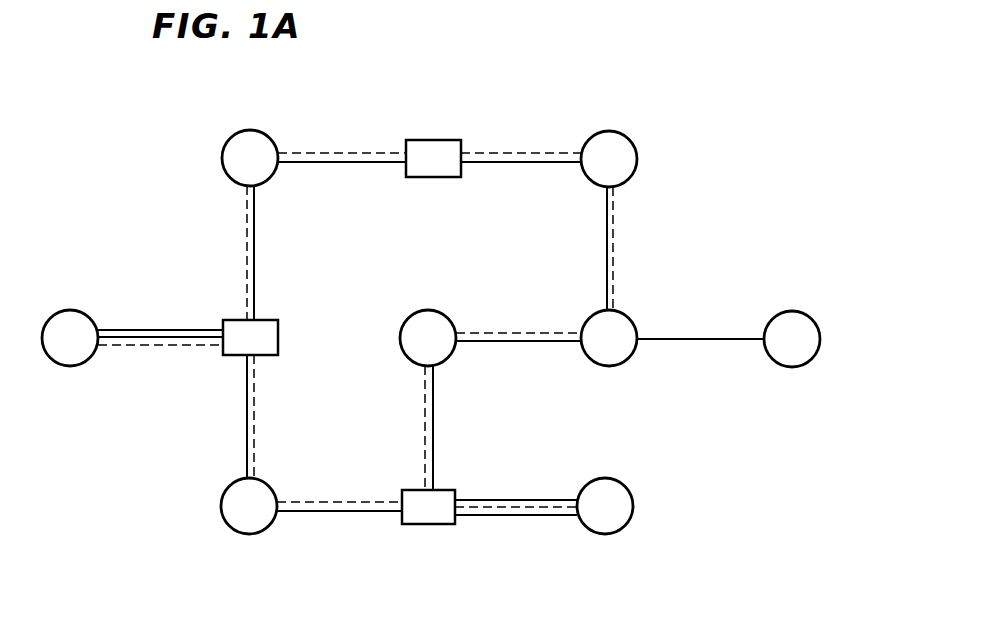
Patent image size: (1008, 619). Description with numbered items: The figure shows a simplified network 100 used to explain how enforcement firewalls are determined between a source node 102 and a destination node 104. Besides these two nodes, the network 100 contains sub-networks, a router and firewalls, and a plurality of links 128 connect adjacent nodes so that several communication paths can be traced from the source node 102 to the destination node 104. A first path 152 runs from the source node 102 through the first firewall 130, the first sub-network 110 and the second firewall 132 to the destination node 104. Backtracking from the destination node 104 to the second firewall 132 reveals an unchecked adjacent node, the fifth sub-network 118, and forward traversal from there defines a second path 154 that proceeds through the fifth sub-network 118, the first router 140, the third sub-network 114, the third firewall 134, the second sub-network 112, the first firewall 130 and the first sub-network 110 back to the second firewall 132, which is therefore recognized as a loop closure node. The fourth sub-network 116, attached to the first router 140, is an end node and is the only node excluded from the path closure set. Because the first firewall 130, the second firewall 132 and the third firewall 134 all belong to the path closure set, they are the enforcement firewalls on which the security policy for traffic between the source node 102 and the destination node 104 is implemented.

The network 100 is at (693, 196).
The source node 102 is at (90, 313).
The destination node 104 is at (622, 484).
The first sub-network 110 is at (238, 532).
The second sub-network 112 is at (268, 138).
The third sub-network 114 is at (628, 138).
The fourth sub-network 116 is at (810, 314).
The fifth sub-network 118 is at (446, 313).
The links 128 is at (345, 163).
The first firewall 130 is at (276, 320).
The second firewall 132 is at (452, 490).
The third firewall 134 is at (456, 140).
The first router 140 is at (627, 313).
The first path 152 is at (347, 512).
The second path 154 is at (350, 153).